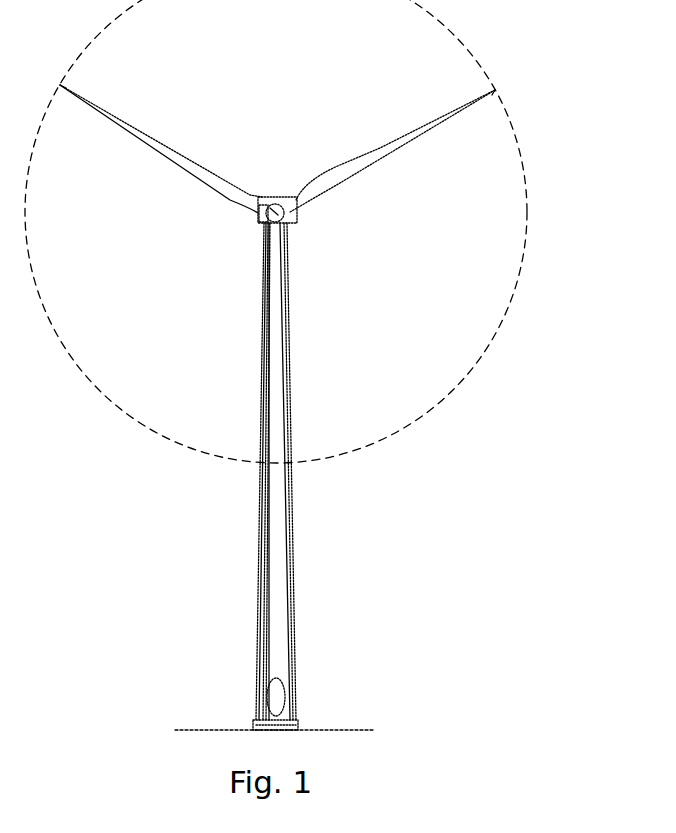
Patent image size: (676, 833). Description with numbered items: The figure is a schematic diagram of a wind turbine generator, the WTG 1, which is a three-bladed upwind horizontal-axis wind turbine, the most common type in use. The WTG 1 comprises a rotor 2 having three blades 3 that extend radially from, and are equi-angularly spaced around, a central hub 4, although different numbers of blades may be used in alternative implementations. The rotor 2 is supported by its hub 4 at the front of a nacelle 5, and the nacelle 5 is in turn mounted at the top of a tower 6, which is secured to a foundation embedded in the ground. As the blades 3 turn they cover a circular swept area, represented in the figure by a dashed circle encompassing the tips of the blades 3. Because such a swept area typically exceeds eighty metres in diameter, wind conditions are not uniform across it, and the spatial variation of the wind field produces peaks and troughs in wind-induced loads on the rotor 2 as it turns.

The WTG 1 is at (556, 44).
The rotor 2 is at (430, 233).
The blades 3 is at (407, 142).
The central hub 4 is at (283, 214).
The nacelle 5 is at (262, 222).
The tower 6 is at (282, 503).